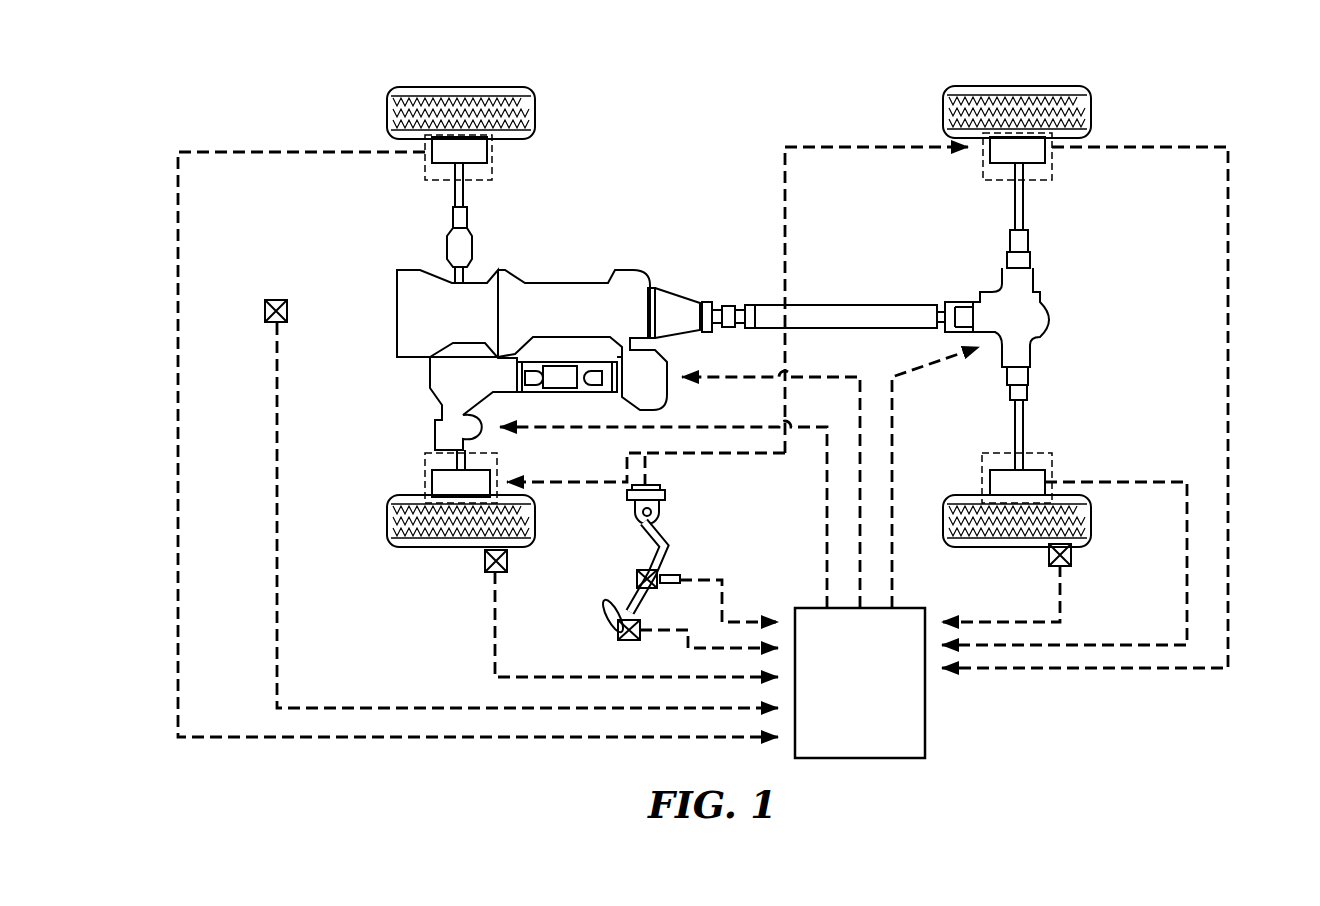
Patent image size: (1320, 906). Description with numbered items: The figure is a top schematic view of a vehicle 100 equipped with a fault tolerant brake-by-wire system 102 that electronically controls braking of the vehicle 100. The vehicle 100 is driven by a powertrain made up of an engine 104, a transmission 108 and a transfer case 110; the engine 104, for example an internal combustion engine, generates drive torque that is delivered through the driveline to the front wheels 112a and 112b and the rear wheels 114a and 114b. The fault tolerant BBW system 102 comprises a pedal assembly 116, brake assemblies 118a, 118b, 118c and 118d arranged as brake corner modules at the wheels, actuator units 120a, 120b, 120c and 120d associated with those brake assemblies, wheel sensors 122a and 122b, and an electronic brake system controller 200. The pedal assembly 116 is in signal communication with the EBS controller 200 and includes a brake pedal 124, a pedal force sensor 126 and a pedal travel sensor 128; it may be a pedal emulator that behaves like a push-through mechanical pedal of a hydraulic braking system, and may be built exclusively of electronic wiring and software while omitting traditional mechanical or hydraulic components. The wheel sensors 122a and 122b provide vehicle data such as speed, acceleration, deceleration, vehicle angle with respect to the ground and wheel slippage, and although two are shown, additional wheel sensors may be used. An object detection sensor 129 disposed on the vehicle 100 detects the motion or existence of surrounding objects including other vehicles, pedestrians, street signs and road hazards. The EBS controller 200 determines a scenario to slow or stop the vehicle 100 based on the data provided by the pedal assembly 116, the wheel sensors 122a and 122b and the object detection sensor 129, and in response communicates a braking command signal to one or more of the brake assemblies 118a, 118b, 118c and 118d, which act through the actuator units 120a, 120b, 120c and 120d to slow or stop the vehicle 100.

The vehicle 100 is at (324, 98).
The fault tolerant BBW system 102 is at (958, 718).
The engine 104 is at (394, 268).
The transmission 108 is at (582, 266).
The transfer case 110 is at (638, 266).
The front wheel 112a is at (438, 551).
The front wheel 112b is at (431, 78).
The rear wheel 114a is at (1013, 553).
The rear wheel 114b is at (1008, 77).
The pedal assembly 116 is at (677, 533).
The brake assembly 118a is at (412, 465).
The brake assembly 118b is at (504, 158).
The brake assembly 118c is at (1061, 163).
The brake assembly 118d is at (977, 468).
The actuator unit 120a is at (458, 487).
The actuator unit 120b is at (470, 153).
The actuator unit 120c is at (1023, 153).
The actuator unit 120d is at (1030, 483).
The wheel sensor 122a is at (486, 574).
The wheel sensor 122b is at (1055, 567).
The brake pedal 124 is at (608, 608).
The pedal force sensor 126 is at (635, 575).
The pedal travel sensor 128 is at (618, 637).
The object detection sensor 129 is at (272, 328).
The EBS controller 200 is at (838, 696).